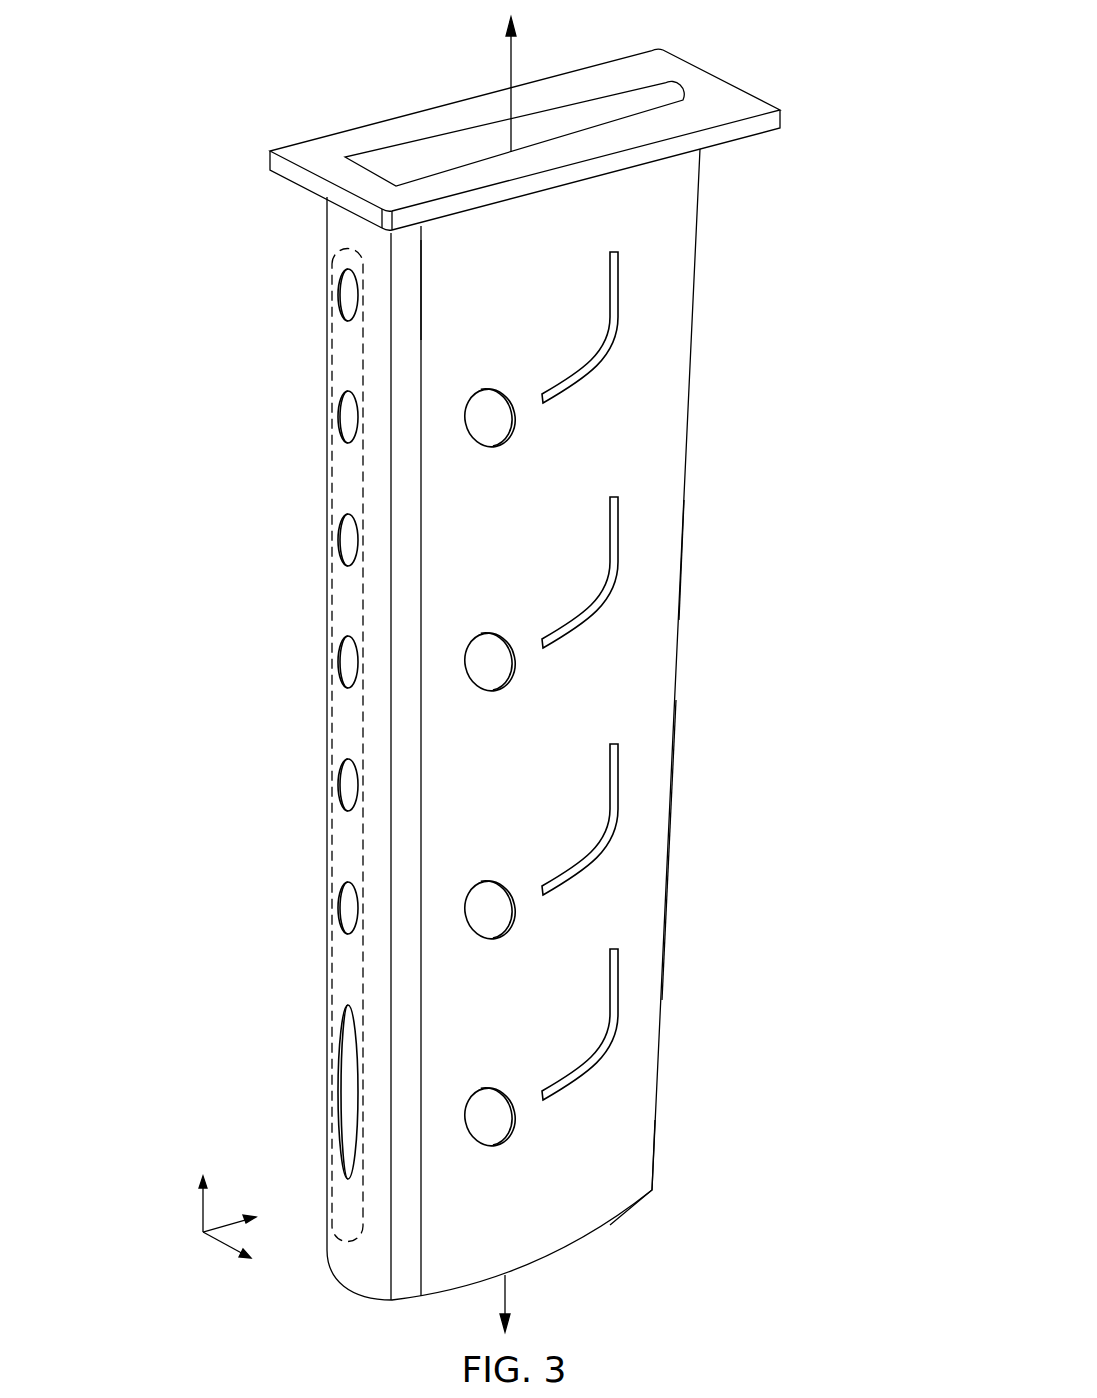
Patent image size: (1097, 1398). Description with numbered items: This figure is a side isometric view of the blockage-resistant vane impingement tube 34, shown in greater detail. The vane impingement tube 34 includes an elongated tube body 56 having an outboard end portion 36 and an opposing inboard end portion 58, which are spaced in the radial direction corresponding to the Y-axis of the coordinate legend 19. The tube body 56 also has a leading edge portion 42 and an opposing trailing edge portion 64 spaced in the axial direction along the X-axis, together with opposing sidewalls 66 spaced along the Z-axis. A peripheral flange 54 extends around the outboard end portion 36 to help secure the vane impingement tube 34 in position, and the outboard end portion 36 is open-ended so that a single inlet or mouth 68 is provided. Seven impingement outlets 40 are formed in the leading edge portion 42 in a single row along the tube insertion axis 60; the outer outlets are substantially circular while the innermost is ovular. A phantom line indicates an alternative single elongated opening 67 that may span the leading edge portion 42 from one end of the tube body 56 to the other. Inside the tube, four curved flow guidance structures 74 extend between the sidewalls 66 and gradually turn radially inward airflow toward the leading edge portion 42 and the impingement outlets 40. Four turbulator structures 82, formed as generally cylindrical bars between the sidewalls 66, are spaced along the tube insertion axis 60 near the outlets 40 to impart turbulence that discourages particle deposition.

The coordinate legend 19 is at (203, 1212).
The vane impingement tube 34 is at (451, 670).
The outboard end portion 36 is at (700, 213).
The impingement outlets 40 is at (345, 300).
The leading edge portion 42 is at (347, 602).
The peripheral flange 54 is at (692, 58).
The elongated tube body 56 is at (710, 560).
The inboard end portion 58 is at (648, 1162).
The tube insertion axis 60 is at (508, 1290).
The trailing edge portion 64 is at (658, 863).
The opposing sidewalls 66 is at (482, 303).
The elongated opening 67 is at (328, 345).
The inlet or mouth 68 is at (388, 155).
The curved flow guidance structures 74 is at (608, 310).
The turbulator structures 82 is at (490, 393).